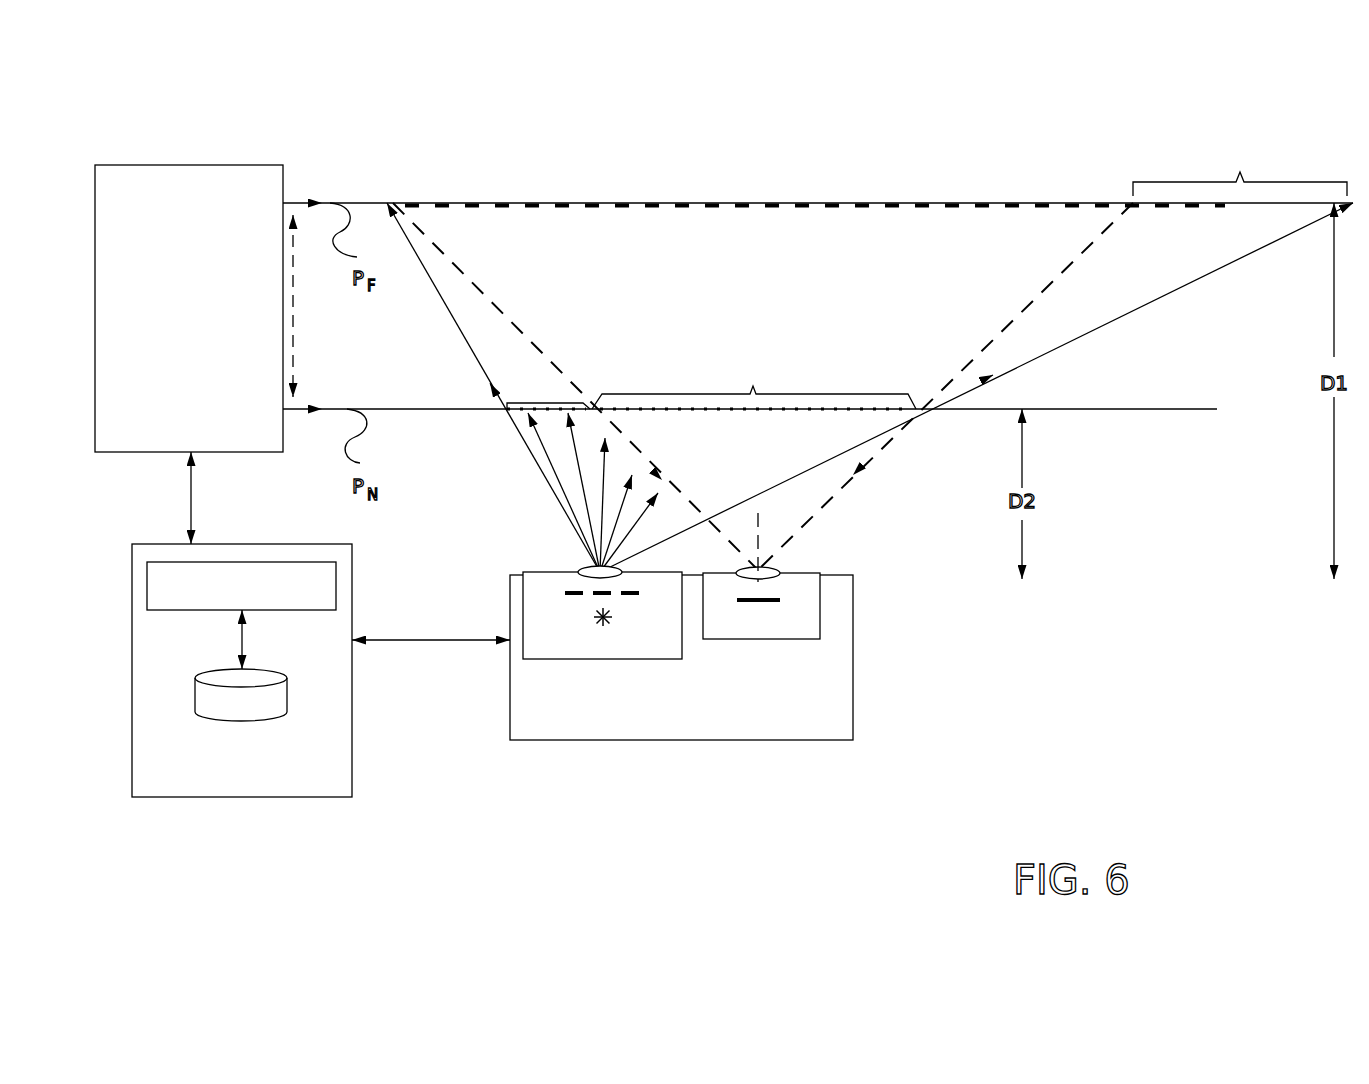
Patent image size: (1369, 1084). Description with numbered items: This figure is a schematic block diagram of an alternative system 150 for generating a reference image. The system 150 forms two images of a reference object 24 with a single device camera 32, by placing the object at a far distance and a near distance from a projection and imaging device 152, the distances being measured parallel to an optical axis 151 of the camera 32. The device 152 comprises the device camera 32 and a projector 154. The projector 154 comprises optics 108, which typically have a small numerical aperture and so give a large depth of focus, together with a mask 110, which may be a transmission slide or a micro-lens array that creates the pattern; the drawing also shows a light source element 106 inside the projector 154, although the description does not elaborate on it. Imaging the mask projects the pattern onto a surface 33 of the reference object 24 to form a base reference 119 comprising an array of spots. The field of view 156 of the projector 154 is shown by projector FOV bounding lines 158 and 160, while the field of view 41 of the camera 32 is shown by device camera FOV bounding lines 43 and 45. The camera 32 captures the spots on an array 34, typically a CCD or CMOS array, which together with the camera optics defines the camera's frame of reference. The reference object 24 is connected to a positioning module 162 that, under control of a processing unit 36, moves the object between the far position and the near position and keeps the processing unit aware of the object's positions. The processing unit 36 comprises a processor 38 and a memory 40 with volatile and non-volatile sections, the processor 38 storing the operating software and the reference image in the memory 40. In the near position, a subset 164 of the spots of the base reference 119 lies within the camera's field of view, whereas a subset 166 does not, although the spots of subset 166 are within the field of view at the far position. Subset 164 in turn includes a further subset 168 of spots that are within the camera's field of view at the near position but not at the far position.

The base reference 119 is at (485, 140).
The reference object 24 is at (902, 203).
The surface 33 is at (747, 203).
The further subset of spots 168 is at (1240, 171).
The device camera FOV bounding line 45 is at (443, 262).
The device camera FOV bounding line 43 is at (1043, 293).
The field of view of projector 156 is at (742, 329).
The field of view 41 is at (765, 461).
The projector FOV bounding line 160 is at (463, 340).
The projector FOV bounding line 158 is at (1157, 295).
The subset of spots 164 is at (754, 385).
The subset of spots 166 is at (545, 403).
The positioning module 162 is at (95, 425).
The optics 108 is at (578, 573).
The mask 110 is at (566, 594).
The light source 106 is at (595, 618).
The projector 154 is at (522, 600).
The optical axis 151 is at (765, 527).
The array 34 is at (782, 600).
The device camera 32 is at (820, 578).
The projection and imaging device 152 is at (850, 642).
The system 150 is at (1246, 606).
The processor 38 is at (147, 585).
The processing unit 36 is at (135, 700).
The memory 40 is at (287, 705).